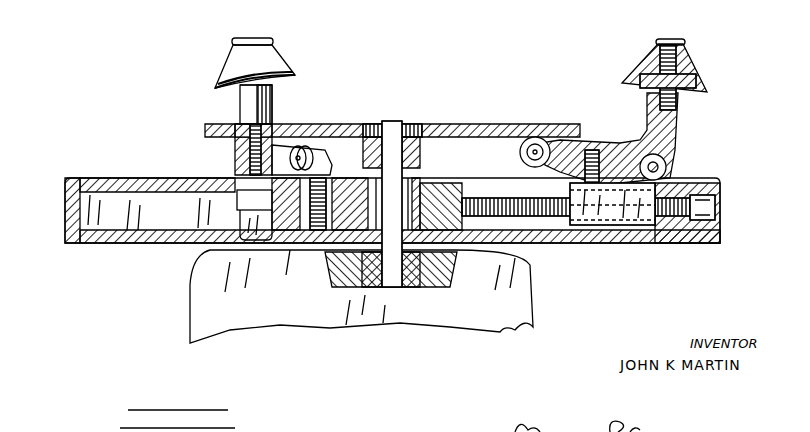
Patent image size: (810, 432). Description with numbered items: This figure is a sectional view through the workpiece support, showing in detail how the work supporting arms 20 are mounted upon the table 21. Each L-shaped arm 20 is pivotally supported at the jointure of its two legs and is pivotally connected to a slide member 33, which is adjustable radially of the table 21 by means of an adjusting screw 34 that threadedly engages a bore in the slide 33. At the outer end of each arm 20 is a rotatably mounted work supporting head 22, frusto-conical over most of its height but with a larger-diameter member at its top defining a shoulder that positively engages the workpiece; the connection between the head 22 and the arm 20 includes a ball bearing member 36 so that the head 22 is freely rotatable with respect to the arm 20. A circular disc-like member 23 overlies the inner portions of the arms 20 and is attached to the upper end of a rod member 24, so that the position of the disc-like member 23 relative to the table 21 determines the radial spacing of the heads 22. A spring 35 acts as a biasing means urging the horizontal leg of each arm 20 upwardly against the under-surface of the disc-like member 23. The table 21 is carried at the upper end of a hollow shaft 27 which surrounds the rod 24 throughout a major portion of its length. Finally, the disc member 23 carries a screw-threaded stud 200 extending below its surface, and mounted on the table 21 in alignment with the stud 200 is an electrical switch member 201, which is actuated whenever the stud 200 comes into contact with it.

The L-shaped arm 20 is at (268, 108).
The table member 21 is at (118, 176).
The work supporting head 22 is at (285, 65).
The disc-like member 23 is at (505, 124).
The rod member 24 is at (404, 180).
The hollow shaft 27 is at (446, 195).
The slide member 33 is at (614, 226).
The adjusting screw 34 is at (658, 228).
The spring 35 is at (300, 173).
The ball bearing member 36 is at (645, 87).
The screw-threaded stud 200 is at (250, 155).
The electrical switch member 201 is at (238, 208).